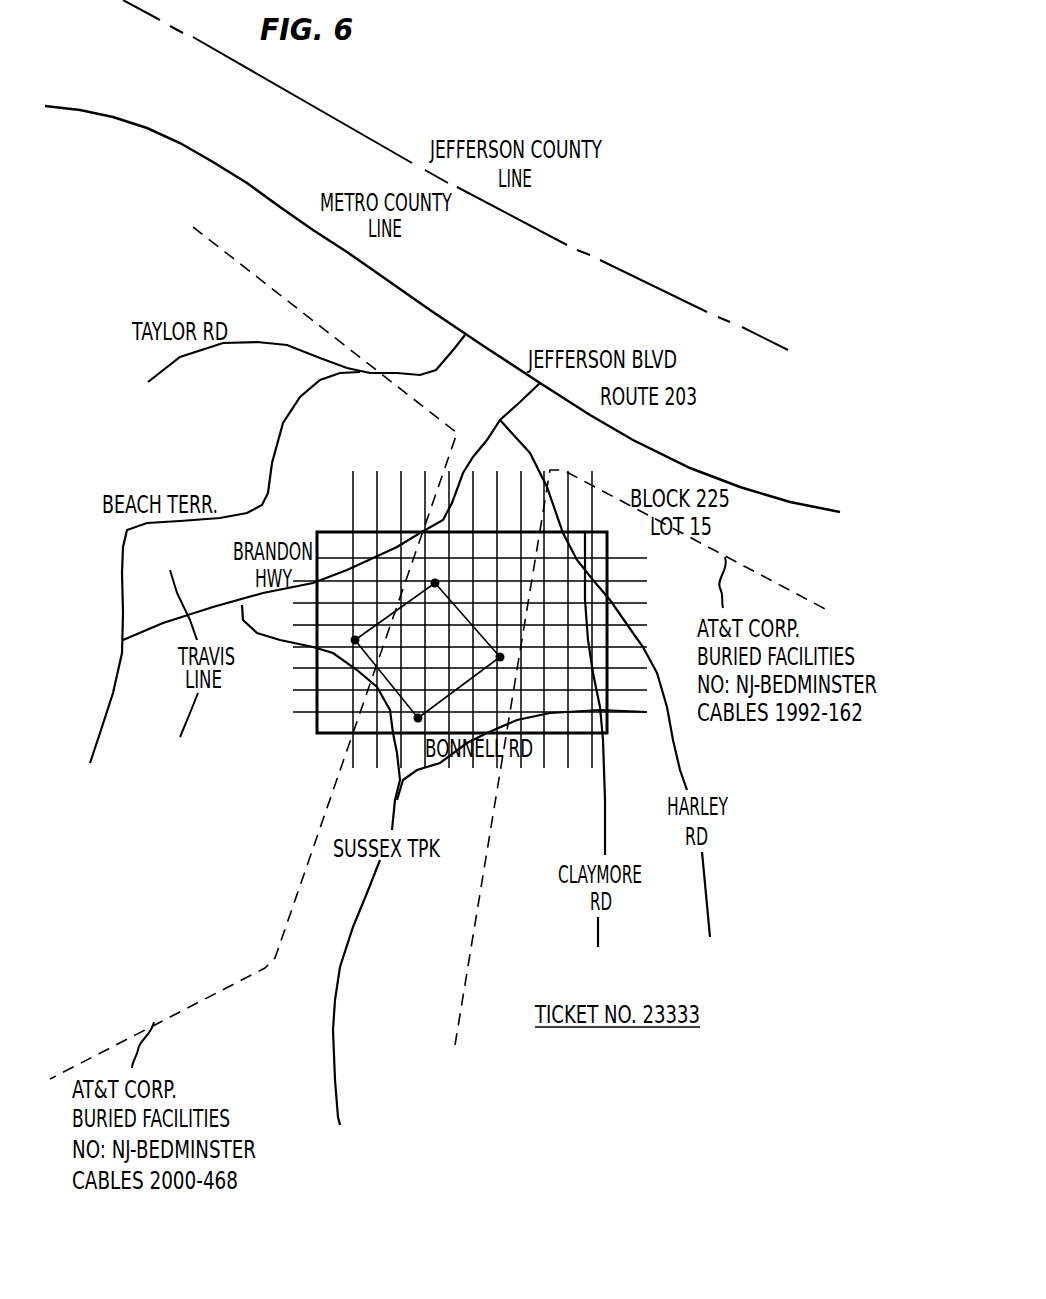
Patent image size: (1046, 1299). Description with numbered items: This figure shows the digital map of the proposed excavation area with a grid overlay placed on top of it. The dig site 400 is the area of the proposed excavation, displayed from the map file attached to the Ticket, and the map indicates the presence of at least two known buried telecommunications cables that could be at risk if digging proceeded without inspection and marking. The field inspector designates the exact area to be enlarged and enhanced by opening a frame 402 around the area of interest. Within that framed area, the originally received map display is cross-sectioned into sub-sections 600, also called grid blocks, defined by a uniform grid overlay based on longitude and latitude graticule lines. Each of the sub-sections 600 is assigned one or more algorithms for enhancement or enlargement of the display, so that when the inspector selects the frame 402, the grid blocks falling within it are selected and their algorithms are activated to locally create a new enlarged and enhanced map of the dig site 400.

The dig site 400 is at (434, 578).
The frame 402 is at (337, 703).
The sub-sections 600 is at (362, 537).